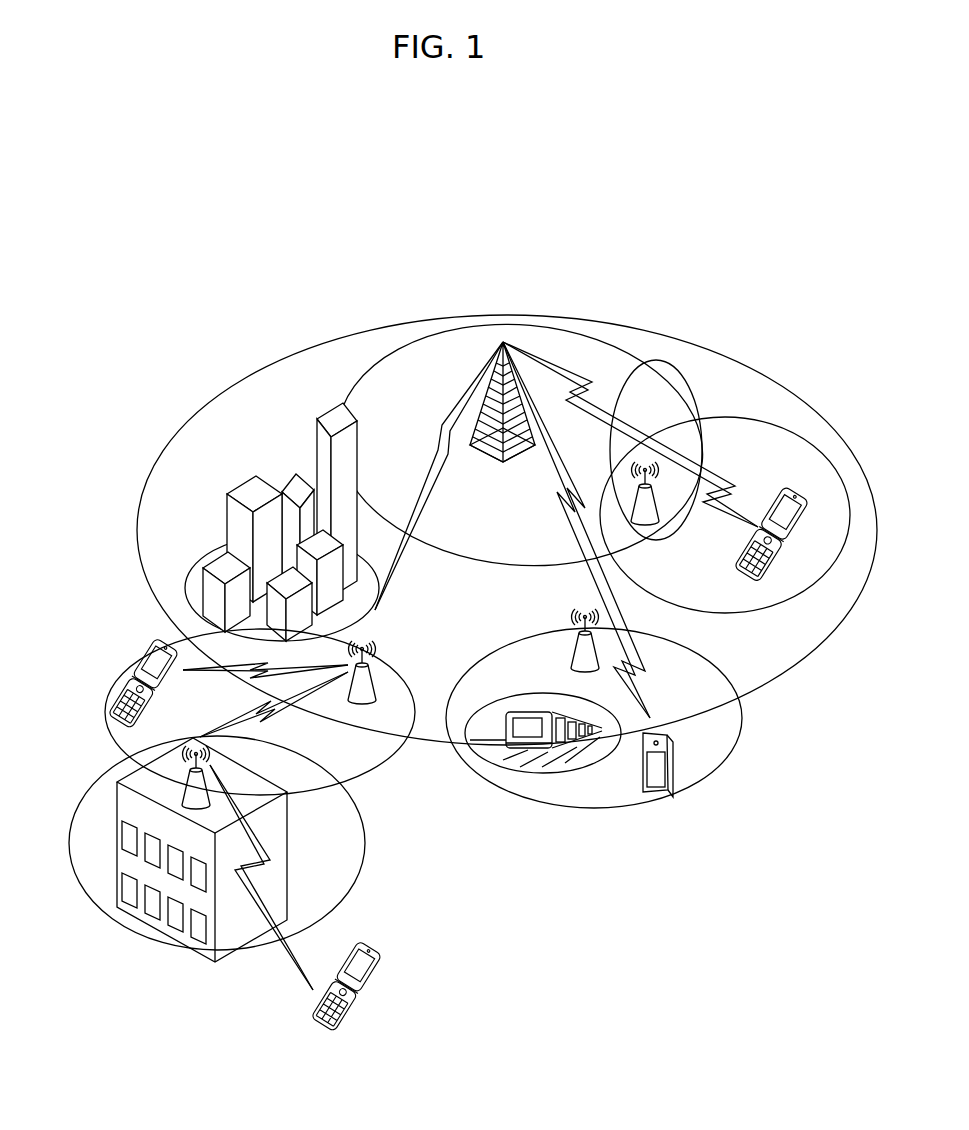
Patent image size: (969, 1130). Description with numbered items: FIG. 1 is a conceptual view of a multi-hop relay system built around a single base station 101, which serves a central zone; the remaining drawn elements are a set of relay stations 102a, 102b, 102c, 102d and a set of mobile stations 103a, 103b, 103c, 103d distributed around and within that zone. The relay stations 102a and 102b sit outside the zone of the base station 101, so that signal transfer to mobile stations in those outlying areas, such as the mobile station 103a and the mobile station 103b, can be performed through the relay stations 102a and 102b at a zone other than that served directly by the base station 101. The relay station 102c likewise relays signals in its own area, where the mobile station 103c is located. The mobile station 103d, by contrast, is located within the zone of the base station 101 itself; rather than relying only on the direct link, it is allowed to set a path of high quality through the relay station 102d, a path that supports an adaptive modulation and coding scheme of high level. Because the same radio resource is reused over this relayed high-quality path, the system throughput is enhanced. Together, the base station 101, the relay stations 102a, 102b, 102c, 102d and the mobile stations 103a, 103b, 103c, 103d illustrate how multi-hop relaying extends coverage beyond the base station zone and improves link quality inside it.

The base station 101 is at (487, 400).
The relay station 102a is at (373, 682).
The relay station 102b is at (182, 802).
The relay station 102c is at (570, 656).
The relay station 102d is at (643, 507).
The mobile station 103a is at (143, 688).
The mobile station 103b is at (345, 1005).
The mobile station 103c is at (660, 768).
The mobile station 103d is at (793, 498).